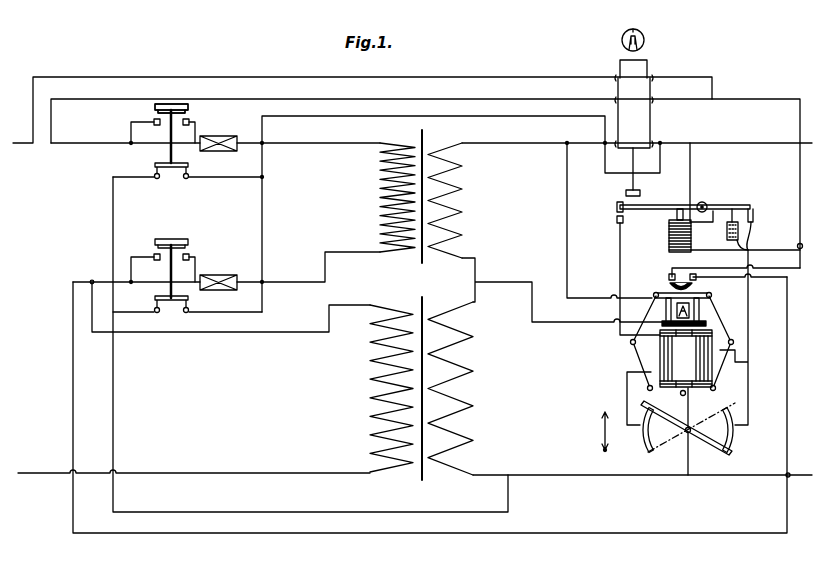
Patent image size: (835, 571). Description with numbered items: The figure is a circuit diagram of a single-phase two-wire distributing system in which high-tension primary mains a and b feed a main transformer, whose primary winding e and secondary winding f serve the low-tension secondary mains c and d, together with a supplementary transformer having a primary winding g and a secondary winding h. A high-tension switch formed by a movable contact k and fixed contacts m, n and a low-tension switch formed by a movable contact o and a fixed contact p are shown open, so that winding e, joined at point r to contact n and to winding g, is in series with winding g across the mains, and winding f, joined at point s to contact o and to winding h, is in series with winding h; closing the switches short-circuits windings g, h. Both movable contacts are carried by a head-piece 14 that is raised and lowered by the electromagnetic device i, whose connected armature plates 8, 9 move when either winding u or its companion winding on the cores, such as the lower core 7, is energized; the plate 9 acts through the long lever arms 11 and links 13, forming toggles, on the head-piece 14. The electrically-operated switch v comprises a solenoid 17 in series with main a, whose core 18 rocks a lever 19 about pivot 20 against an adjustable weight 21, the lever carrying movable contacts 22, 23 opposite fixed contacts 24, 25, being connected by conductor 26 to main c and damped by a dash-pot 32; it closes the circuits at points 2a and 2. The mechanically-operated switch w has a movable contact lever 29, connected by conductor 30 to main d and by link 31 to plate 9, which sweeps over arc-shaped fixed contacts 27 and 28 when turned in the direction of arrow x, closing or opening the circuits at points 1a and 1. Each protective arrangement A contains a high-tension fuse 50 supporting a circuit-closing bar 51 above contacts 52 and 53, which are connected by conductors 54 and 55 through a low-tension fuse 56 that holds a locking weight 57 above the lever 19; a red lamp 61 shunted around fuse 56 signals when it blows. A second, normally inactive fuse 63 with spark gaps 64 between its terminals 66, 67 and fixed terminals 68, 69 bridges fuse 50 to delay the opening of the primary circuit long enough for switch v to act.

The incandescent electric lamp 61 is at (646, 40).
The second fuse 63 is at (178, 103).
The fixed terminal 66 is at (155, 115).
The fixed terminal 67 is at (189, 118).
The fixed terminal 68 is at (131, 122).
The fixed terminal 69 is at (195, 122).
The gaps 64 is at (176, 128).
The circuit-closing bar 51 is at (165, 162).
The high-tension fuse 50 is at (180, 148).
The contact 52 is at (157, 180).
The contact 53 is at (188, 180).
The second conductor 55 is at (510, 128).
The conductor 54 is at (113, 376).
The low-tension fuse 56 is at (631, 169).
The locking device 57 is at (641, 193).
The conductor 26 is at (690, 170).
The lever 19 is at (618, 204).
The second point 2a is at (609, 217).
The insulated fixed contact 24 is at (617, 224).
The movable contact 22 is at (616, 208).
The movable contact 23 is at (752, 212).
The second point 2 is at (759, 236).
The pivot 20 is at (701, 198).
The iron core 18 is at (676, 214).
The solenoid 17 is at (669, 244).
The weight 21 is at (726, 229).
The dash-pot 32 is at (746, 252).
The insulated fixed contact 25 is at (795, 239).
The upper head-piece 14 is at (654, 296).
The movable iron plate 8 is at (668, 306).
The links 13 is at (631, 341).
The lower hollow iron core 7 is at (650, 341).
The long arms 11 is at (630, 361).
The link 31 is at (673, 401).
The movable iron plate 9 is at (694, 431).
The arc-shaped fixed contact 28 is at (646, 446).
The arc-shaped fixed contact 27 is at (738, 441).
The point 1 is at (633, 463).
The conductor 30 is at (672, 459).
The movable contact 29 is at (705, 459).
The point 1a is at (754, 463).
The relay A is at (151, 92).
The high-tension primary main a is at (794, 175).
The high-tension primary main b is at (415, 465).
The low-tension secondary main c is at (637, 135).
The low-tension secondary main d is at (801, 474).
The primary winding of main transformer e is at (380, 388).
The secondary winding of main transformer f is at (457, 388).
The primary winding of supplementary transformer g is at (386, 197).
The secondary winding of supplementary transformer h is at (451, 200).
The electromagnetic device i is at (686, 358).
The movable contact k is at (683, 282).
The fixed contact m is at (723, 275).
The fixed contact n is at (738, 284).
The movable contact o is at (706, 319).
The fixed contact p is at (700, 306).
The connection point r is at (221, 297).
The connection point s is at (558, 290).
The winding u is at (652, 374).
The electrically-operated switch v is at (641, 235).
The mechanically-operated switch w is at (718, 413).
The arrow x is at (595, 432).